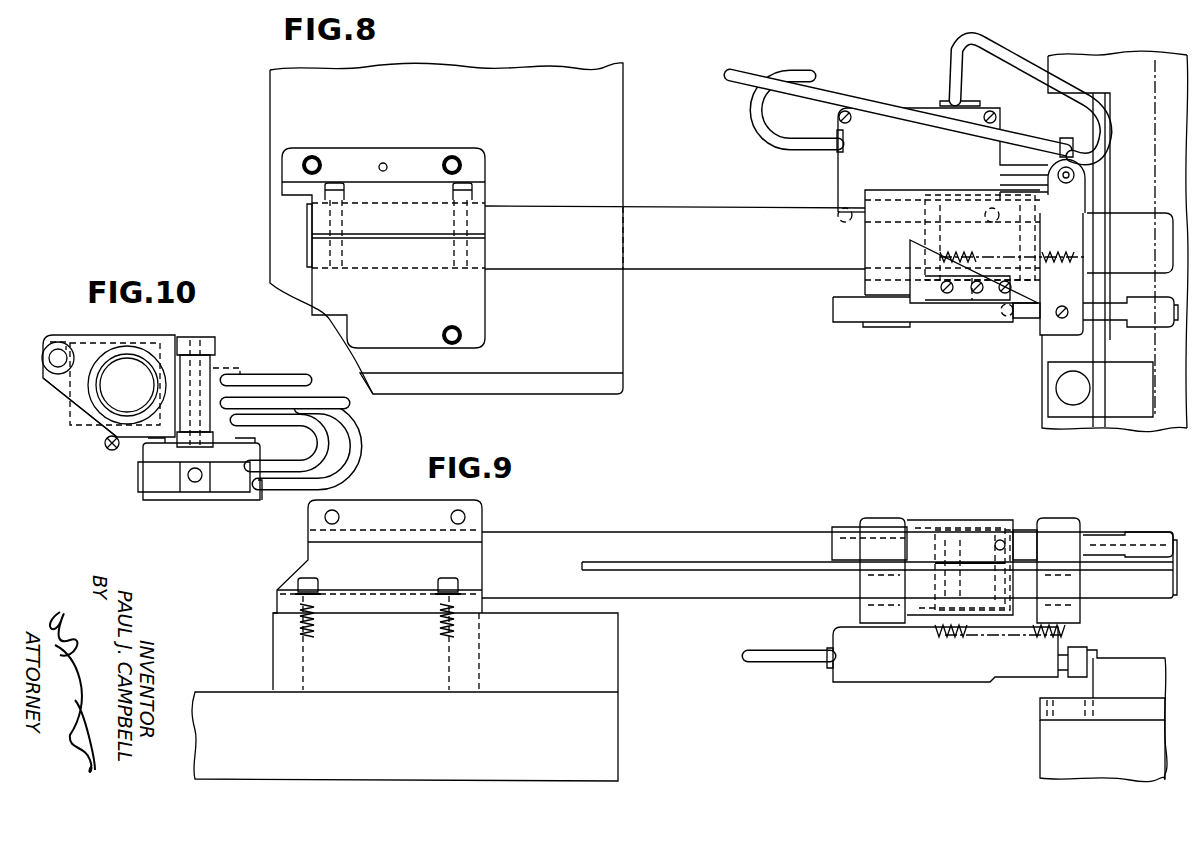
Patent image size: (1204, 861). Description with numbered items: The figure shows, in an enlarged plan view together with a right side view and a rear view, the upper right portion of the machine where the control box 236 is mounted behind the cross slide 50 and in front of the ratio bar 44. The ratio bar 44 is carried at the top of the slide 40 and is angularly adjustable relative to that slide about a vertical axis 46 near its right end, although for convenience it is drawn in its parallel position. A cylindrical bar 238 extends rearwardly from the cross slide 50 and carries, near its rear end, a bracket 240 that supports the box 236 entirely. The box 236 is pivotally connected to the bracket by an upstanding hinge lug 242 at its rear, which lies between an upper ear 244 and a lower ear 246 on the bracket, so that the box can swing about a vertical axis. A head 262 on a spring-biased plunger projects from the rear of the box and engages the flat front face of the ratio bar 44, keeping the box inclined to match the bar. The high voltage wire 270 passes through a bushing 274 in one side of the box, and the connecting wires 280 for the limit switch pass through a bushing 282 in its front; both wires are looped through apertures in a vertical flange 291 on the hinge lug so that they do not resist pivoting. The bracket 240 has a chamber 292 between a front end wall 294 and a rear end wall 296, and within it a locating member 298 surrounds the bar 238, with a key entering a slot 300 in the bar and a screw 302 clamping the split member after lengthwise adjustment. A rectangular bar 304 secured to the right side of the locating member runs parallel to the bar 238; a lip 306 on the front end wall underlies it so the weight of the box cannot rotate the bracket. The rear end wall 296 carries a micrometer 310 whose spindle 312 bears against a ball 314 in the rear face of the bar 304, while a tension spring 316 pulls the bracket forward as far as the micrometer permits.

In FIG. 8, the slide 40 is at (1120, 425).
In FIG. 9, the slide 40 is at (1048, 753).
In FIG. 8, the ratio bar 44 is at (1138, 183).
In FIG. 9, the ratio bar 44 is at (1140, 666).
In FIG. 8, the vertical axis 46 is at (1062, 386).
In FIG. 9, the vertical axis 46 is at (1042, 699).
In FIG. 8, the cross slide 50 is at (624, 190).
In FIG. 9, the cross slide 50 is at (620, 662).
In FIG. 8, the control box 236 is at (838, 118).
In FIG. 10, the control box 236 is at (222, 498).
In FIG. 9, the control box 236 is at (930, 678).
In FIG. 8, the cylindrical bar 238 is at (785, 210).
In FIG. 10, the cylindrical bar 238 is at (112, 400).
In FIG. 9, the cylindrical bar 238 is at (735, 545).
In FIG. 8, the bracket 240 is at (932, 190).
In FIG. 10, the bracket 240 is at (157, 341).
In FIG. 9, the bracket 240 is at (923, 522).
In FIG. 10, the hinge lug 242 is at (212, 366).
In FIG. 10, the ear 244 is at (204, 335).
In FIG. 10, the ear 246 is at (210, 450).
In FIG. 8, the head 262 is at (1100, 152).
In FIG. 10, the head 262 is at (165, 482).
In FIG. 9, the head 262 is at (1082, 650).
In FIG. 8, the wire 270 is at (1022, 64).
In FIG. 10, the wire 270 is at (290, 378).
In FIG. 8, the bushing 274 is at (966, 100).
In FIG. 10, the bushing 274 is at (262, 484).
In FIG. 8, the connecting wires 280 is at (768, 140).
In FIG. 10, the connecting wires 280 is at (324, 410).
In FIG. 9, the connecting wires 280 is at (776, 648).
In FIG. 8, the bushing 282 is at (838, 142).
In FIG. 9, the bushing 282 is at (828, 660).
In FIG. 8, the vertical flange 291 is at (1060, 138).
In FIG. 10, the vertical flange 291 is at (230, 376).
In FIG. 8, the chamber 292 is at (923, 284).
In FIG. 9, the chamber 292 is at (1026, 530).
In FIG. 8, the front end wall 294 is at (866, 258).
In FIG. 8, the rear end wall 296 is at (1076, 246).
In FIG. 8, the locating member 298 is at (962, 296).
In FIG. 9, the locating member 298 is at (990, 560).
In FIG. 9, the slot 300 is at (776, 565).
In FIG. 8, the screw 302 is at (978, 296).
In FIG. 9, the screw 302 is at (970, 530).
In FIG. 8, the rectangular bar 304 is at (845, 322).
In FIG. 9, the rectangular bar 304 is at (842, 527).
In FIG. 8, the lip 306 is at (888, 328).
In FIG. 10, the lip 306 is at (62, 396).
In FIG. 9, the lip 306 is at (864, 578).
In FIG. 8, the micrometer 310 is at (1112, 310).
In FIG. 10, the micrometer 310 is at (55, 344).
In FIG. 9, the micrometer 310 is at (1100, 540).
In FIG. 8, the spindle 312 is at (1033, 318).
In FIG. 9, the spindle 312 is at (1032, 540).
In FIG. 8, the ball 314 is at (1005, 312).
In FIG. 9, the ball 314 is at (1003, 540).
In FIG. 8, the tension spring 316 is at (978, 258).
In FIG. 10, the tension spring 316 is at (113, 452).
In FIG. 9, the tension spring 316 is at (955, 636).